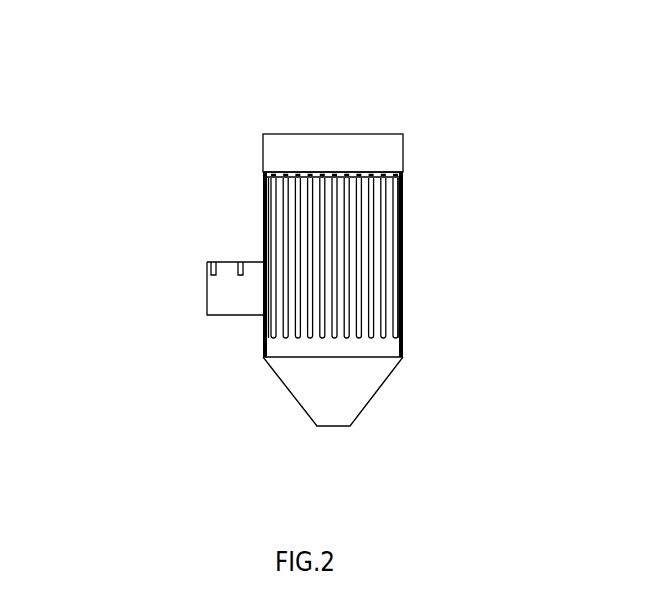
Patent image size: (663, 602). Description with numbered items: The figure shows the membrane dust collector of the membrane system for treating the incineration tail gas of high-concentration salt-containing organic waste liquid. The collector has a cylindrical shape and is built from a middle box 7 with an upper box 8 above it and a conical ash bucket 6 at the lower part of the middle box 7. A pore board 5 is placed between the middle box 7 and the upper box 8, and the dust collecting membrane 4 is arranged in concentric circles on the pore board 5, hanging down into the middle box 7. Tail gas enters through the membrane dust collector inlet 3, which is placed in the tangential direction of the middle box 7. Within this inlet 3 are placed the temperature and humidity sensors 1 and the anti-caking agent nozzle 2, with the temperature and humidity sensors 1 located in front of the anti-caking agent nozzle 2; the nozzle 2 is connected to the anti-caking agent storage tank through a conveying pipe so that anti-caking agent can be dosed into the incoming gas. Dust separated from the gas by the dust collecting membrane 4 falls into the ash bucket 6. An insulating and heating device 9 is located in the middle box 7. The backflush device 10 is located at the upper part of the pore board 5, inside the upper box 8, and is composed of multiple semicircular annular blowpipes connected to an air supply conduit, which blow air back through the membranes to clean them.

The temperature and humidity sensors 1 is at (208, 276).
The anti-caking agent nozzle 2 is at (237, 262).
The membrane dust collector inlet 3 is at (247, 308).
The dust collecting membrane 4 is at (277, 207).
The pore board 5 is at (263, 172).
The ash bucket 6 is at (308, 410).
The middle box 7 is at (403, 355).
The upper box 8 is at (372, 134).
The insulating and heating device 9 is at (403, 240).
The backflush device 10 is at (385, 175).